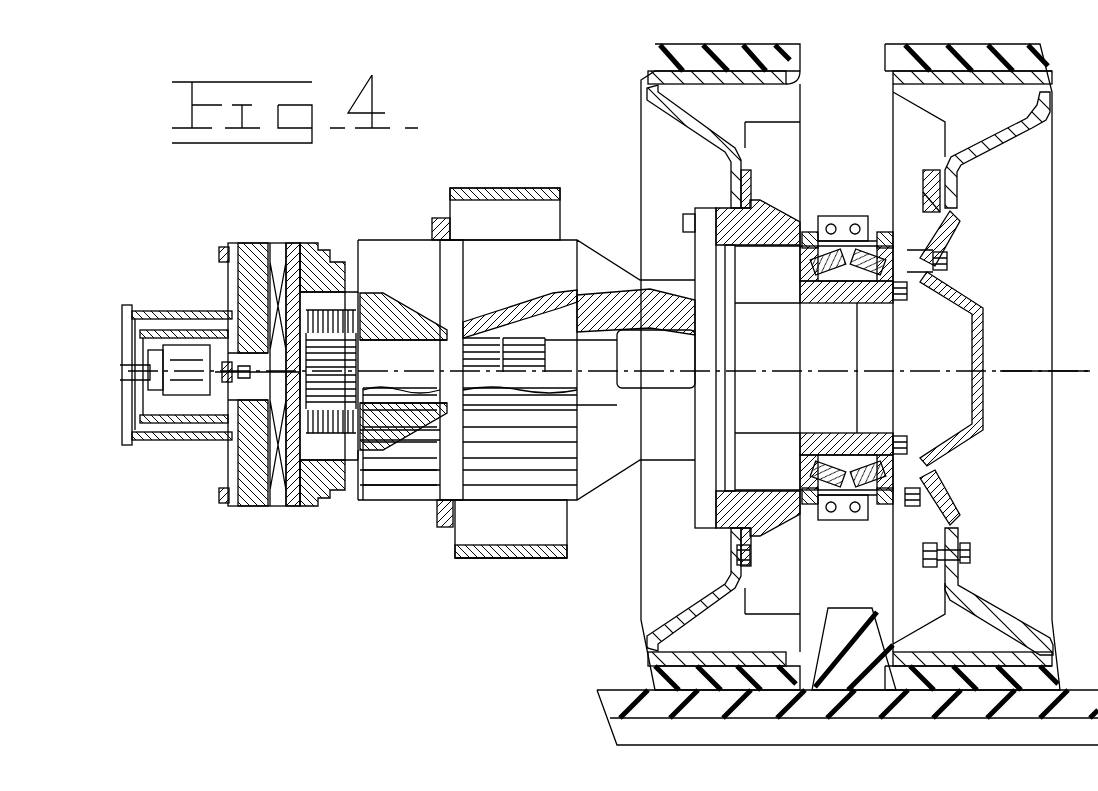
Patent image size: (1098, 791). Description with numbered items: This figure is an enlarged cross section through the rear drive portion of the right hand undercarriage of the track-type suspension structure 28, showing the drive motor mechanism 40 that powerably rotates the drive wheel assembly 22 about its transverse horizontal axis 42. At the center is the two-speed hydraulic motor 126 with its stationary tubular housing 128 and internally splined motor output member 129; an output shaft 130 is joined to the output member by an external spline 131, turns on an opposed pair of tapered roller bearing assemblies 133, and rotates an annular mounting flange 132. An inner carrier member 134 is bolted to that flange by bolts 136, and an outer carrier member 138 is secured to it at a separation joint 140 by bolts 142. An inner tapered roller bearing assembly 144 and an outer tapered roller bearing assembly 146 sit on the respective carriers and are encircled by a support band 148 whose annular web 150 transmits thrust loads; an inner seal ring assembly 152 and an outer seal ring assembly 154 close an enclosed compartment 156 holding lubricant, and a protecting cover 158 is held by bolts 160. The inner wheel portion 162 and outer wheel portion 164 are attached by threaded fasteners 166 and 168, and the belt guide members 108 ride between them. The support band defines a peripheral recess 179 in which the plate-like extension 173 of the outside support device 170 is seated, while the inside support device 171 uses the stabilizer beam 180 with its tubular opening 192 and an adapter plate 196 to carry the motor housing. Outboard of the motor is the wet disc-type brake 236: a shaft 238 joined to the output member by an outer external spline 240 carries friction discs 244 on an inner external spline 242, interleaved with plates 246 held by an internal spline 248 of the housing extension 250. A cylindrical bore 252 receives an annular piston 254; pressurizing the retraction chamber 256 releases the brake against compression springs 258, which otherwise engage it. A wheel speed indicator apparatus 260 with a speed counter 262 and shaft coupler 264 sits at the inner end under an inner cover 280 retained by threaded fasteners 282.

The drive wheel assembly 22 is at (636, 93).
The track-type suspension structure 28 is at (432, 598).
The drive motor mechanism 40 is at (428, 214).
The transverse and horizontal axis 42 is at (1026, 350).
The internal guide member 108 is at (846, 616).
The hydraulic motor 126 is at (505, 238).
The housing 128 is at (548, 238).
The motor output member 129 is at (530, 316).
The output shaft 130 is at (675, 366).
The external spline 131 is at (546, 358).
The mounting flange 132 is at (710, 208).
The tapered roller bearing assemblies 133 is at (642, 283).
The inner carrier member 134 is at (748, 176).
The bolts 136 is at (689, 214).
The outer carrier member 138 is at (942, 204).
The separation joint 140 is at (860, 304).
The bolts 142 is at (908, 294).
The inner tapered roller bearing assembly 144 is at (816, 434).
The outer tapered roller bearing assembly 146 is at (870, 434).
The support band 148 is at (806, 236).
The annular web 150 is at (843, 304).
The inner seal ring assembly 152 is at (812, 500).
The outer seal ring assembly 154 is at (862, 504).
The enclosed compartment 156 is at (937, 485).
The protecting cover 158 is at (960, 300).
The bolts 160 is at (947, 262).
The inner wheel portion 162 is at (672, 620).
The outer wheel portion 164 is at (996, 606).
The threaded fasteners 166 is at (740, 552).
The threaded fasteners 168 is at (970, 553).
The outside support device 170 is at (852, 214).
The inside support device 171 is at (520, 562).
The plate-like extension 173 is at (838, 216).
The peripheral recess 179 is at (856, 521).
The stabilizer beam 180 is at (540, 196).
The tubular opening 192 is at (556, 548).
The adapter plate 196 is at (445, 528).
The wet disc-type brake 236 is at (280, 512).
The shaft 238 is at (460, 406).
The outer external spline 240 is at (450, 400).
The inner external spline 242 is at (350, 402).
The friction discs 244 is at (362, 340).
The plates 246 is at (366, 308).
The internal spline 248 is at (346, 300).
The housing extension 250 is at (308, 238).
The cylindrical bore 252 is at (316, 506).
The annular piston 254 is at (348, 452).
The retraction chamber 256 is at (350, 475).
The compression springs 258 is at (290, 244).
The wheel speed indicator apparatus 260 is at (188, 308).
The speed counter 262 is at (168, 372).
The shaft coupler 264 is at (240, 456).
The inner cover 280 is at (170, 442).
The threaded fasteners 282 is at (227, 495).